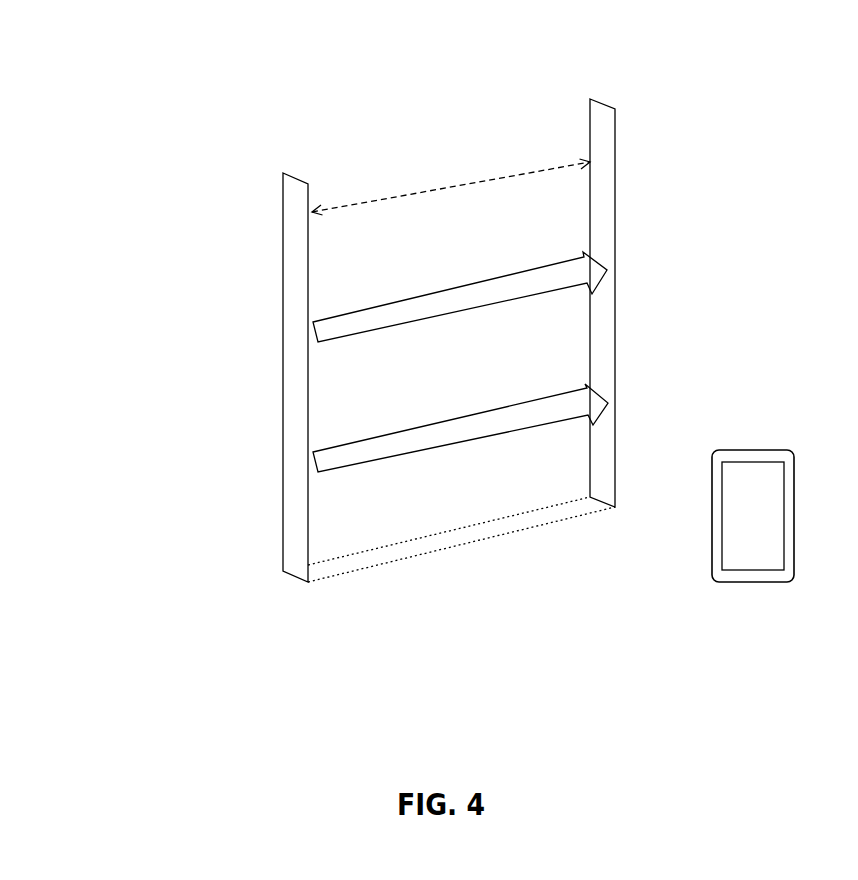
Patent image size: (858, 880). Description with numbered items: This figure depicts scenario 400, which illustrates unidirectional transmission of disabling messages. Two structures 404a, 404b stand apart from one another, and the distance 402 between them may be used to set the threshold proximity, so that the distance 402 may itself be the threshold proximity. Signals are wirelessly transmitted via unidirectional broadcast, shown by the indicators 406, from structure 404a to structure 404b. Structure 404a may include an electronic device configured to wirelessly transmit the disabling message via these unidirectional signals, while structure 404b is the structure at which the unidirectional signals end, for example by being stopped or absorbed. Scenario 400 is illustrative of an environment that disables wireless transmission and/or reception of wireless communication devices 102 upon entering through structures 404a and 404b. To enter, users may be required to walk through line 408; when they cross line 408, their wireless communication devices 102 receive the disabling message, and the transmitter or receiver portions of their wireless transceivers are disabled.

The scenario 400 is at (90, 93).
The wireless communication device 102 is at (772, 528).
The distance 402 is at (458, 184).
The structure 404a is at (302, 180).
The structure 404b is at (603, 104).
The indicator 406 is at (438, 295).
The line 408 is at (472, 520).